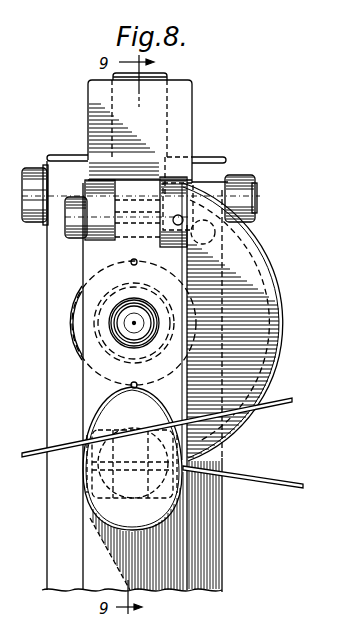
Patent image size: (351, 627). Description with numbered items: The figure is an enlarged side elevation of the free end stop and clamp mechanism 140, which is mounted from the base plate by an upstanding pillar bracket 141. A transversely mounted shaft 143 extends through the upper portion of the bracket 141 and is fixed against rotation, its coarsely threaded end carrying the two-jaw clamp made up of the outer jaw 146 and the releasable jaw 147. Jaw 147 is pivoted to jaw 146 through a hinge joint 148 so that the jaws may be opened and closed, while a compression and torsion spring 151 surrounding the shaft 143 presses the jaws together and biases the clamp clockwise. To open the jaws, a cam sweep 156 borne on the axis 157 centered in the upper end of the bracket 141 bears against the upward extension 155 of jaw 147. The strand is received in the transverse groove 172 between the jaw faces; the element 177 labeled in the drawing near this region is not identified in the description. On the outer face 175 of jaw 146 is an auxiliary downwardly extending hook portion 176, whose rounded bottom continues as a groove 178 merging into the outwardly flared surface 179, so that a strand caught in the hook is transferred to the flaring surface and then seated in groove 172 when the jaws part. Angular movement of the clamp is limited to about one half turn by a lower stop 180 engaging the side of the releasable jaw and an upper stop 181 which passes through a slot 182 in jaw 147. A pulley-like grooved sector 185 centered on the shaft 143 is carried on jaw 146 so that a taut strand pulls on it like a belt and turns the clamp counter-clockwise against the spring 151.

The free end and fixed stop and clamp mechanism 140 is at (42, 296).
The pillar bracket 141 is at (50, 577).
The shaft 143 is at (92, 322).
The jaw 146 is at (87, 378).
The jaw 147 is at (89, 126).
The hinge joint 148 is at (75, 220).
The compression and torsion spring 151 is at (72, 340).
The upward extension 155 is at (157, 100).
The cam sweep 156 is at (167, 74).
The axis 157 is at (257, 200).
The transverse groove 172 is at (136, 503).
The outer face 175 is at (95, 395).
The hook portion 176 is at (123, 403).
The pin 177 is at (94, 432).
The groove 178 is at (86, 471).
The surface 179 is at (88, 521).
The lower stop 180 is at (236, 434).
The upper stop 181 is at (250, 242).
The slot 182 is at (90, 261).
The sector 185 is at (263, 297).